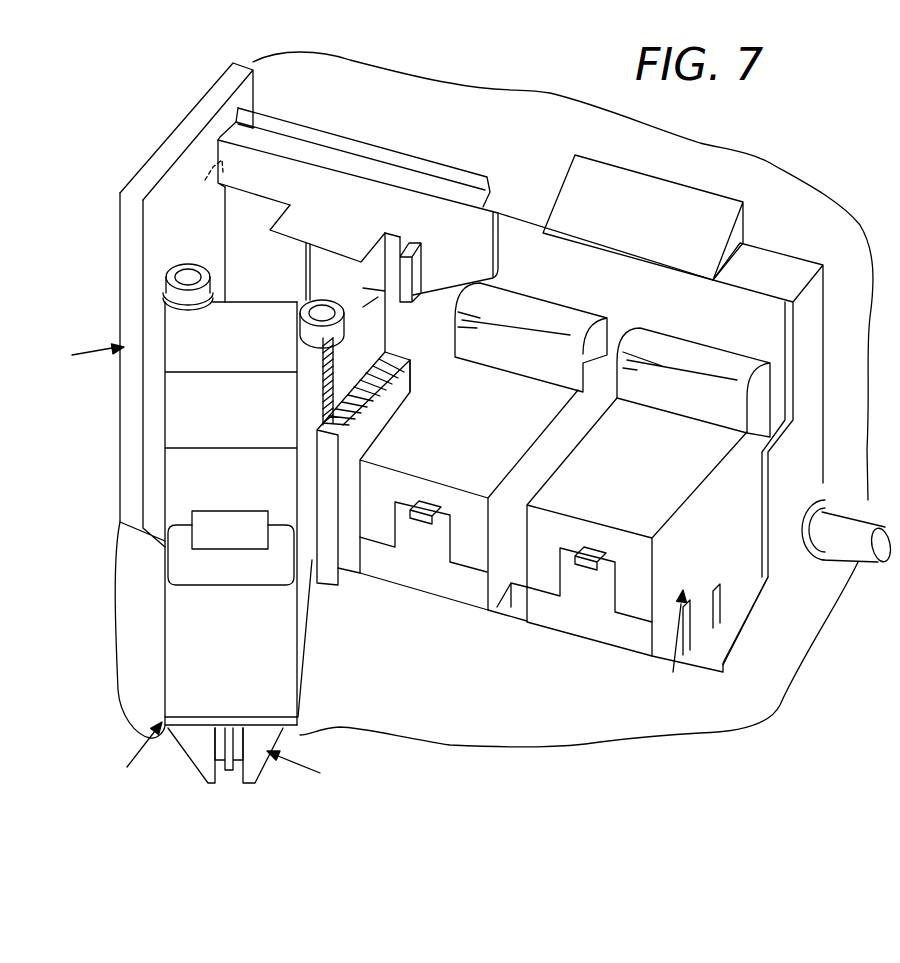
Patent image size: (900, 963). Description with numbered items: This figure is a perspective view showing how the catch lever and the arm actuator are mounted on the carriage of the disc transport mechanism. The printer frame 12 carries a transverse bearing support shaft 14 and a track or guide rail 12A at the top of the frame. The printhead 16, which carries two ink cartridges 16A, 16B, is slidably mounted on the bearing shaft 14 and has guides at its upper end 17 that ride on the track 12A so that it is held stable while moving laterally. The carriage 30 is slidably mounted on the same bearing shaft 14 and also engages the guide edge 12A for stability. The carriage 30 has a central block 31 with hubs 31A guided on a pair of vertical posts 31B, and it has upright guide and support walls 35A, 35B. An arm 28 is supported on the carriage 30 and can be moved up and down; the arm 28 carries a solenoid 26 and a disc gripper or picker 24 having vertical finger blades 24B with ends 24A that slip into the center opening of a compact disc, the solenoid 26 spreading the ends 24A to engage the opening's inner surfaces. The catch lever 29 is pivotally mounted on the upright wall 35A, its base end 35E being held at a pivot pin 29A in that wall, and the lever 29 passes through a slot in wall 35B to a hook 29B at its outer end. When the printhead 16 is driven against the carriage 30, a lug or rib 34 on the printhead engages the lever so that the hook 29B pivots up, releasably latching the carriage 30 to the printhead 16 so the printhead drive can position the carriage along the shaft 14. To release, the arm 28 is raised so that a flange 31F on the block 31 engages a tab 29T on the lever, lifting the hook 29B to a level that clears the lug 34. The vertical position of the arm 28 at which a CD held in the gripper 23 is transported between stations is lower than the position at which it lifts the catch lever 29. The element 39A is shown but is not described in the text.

The frame 12 is at (767, 673).
The track 12A is at (465, 173).
The bearing support shaft 14 is at (845, 550).
The printhead 16 is at (687, 645).
The ink cartridge 16A is at (437, 575).
The ink cartridge 16B is at (588, 613).
The upper end 17 is at (757, 258).
The gripper 23 is at (130, 763).
The disc gripper 24 is at (284, 760).
The ends 24A is at (252, 788).
The finger blades 24B is at (200, 757).
The solenoid 26 is at (180, 524).
The arm 28 is at (305, 595).
The catch lever 29 is at (468, 240).
The pivot pin 29A is at (210, 172).
The hook 29B is at (446, 268).
The tab 29T is at (360, 232).
The carriage 30 is at (77, 357).
The central block 31 is at (197, 407).
The hubs 31A is at (300, 315).
The vertical posts 31B is at (184, 295).
The flange 31F is at (323, 372).
The lug 34 is at (418, 262).
The upright guide and support wall 35A is at (127, 302).
The upright guide and support wall 35B is at (325, 470).
The base end 35E is at (237, 136).
The panel top portion 39A is at (255, 88).